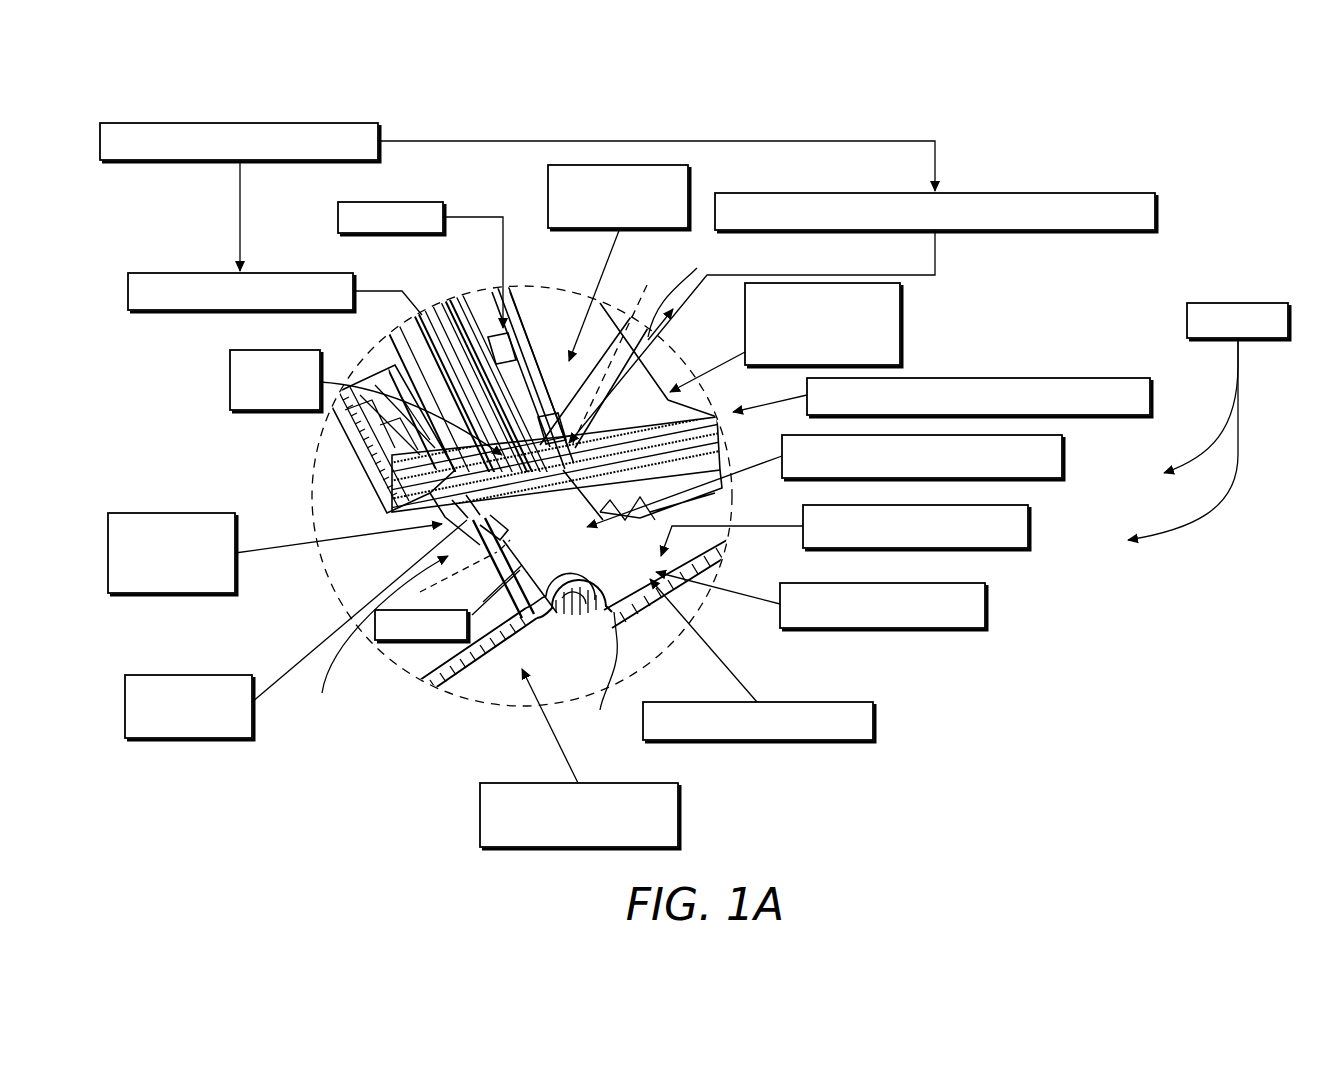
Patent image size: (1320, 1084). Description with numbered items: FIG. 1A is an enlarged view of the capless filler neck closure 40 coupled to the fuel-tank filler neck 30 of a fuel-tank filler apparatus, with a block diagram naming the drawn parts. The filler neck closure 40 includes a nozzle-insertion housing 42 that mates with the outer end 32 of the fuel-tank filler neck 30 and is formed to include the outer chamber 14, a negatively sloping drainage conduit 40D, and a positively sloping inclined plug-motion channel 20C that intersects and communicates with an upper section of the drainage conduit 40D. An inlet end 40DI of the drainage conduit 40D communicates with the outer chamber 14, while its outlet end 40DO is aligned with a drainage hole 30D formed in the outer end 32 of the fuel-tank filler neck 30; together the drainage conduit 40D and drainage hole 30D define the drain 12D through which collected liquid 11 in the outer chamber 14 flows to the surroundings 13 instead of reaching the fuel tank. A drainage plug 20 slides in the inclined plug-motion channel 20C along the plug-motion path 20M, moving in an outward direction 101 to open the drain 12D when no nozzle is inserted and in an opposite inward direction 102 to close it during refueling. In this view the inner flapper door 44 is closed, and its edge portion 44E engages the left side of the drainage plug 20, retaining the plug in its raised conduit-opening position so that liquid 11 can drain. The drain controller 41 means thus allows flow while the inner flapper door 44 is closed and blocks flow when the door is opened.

The drain controller 41 is at (333, 123).
The drainage plug 20 is at (185, 310).
The liquid 11 is at (394, 202).
The outer chamber 14 is at (548, 196).
The inclined plug-motion channel 20C is at (1083, 193).
The plug-motion path 20M is at (623, 349).
The outward direction 101 is at (687, 293).
The nozzle-insertion housing 42 is at (902, 333).
The filler neck closure 40 is at (1099, 378).
The drain 12D is at (1230, 303).
The drainage conduit 40D is at (1062, 457).
The drainage hole 30D is at (1028, 527).
The outlet end 40DO is at (893, 628).
The inlet end 40DI is at (230, 380).
The inner flapper door 44 is at (165, 513).
The edge portion 44E is at (198, 675).
The inward direction 102 is at (376, 642).
The surroundings 13 is at (830, 702).
The fuel-tank filler neck 30 is at (535, 783).
The outer end 32 is at (589, 667).